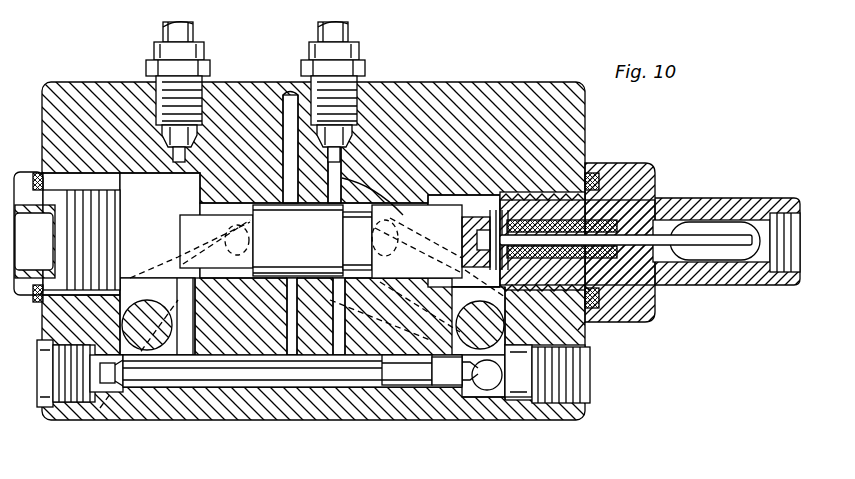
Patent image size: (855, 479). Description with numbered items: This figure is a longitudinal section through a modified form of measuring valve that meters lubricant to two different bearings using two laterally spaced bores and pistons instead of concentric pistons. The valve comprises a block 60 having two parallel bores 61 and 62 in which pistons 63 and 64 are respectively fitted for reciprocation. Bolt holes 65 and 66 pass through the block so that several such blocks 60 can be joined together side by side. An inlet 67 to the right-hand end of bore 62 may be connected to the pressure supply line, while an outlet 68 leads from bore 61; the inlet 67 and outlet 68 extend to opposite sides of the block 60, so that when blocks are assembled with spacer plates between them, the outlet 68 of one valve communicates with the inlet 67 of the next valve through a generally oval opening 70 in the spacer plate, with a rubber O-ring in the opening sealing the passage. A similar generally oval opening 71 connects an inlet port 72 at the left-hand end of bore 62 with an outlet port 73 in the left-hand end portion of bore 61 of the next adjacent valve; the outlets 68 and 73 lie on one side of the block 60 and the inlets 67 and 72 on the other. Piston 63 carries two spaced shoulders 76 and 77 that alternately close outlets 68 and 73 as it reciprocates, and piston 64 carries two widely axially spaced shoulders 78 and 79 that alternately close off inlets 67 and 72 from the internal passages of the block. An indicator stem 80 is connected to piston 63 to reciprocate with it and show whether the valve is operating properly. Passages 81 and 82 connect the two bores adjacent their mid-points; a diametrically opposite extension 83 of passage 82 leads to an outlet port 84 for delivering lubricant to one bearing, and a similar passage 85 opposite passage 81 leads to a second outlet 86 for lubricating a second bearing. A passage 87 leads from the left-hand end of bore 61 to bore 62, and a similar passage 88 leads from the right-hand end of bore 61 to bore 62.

The block 60 is at (67, 82).
The bore 61 is at (253, 220).
The bore 62 is at (241, 383).
The piston 63 is at (180, 226).
The piston 64 is at (315, 370).
The bolt hole 65 is at (46, 312).
The bolt hole 66 is at (578, 330).
The inlet 67 is at (520, 350).
The outlet 68 is at (388, 243).
The generally oval opening 70 is at (483, 370).
The generally oval opening 71 is at (147, 393).
The inlet port 72 is at (101, 408).
The outlet port 73 is at (272, 241).
The shoulder 76 is at (338, 225).
The shoulder 77 is at (457, 243).
The shoulder 78 is at (168, 378).
The shoulder 79 is at (400, 375).
The indicator stem 80 is at (703, 238).
The passage 81 is at (285, 350).
The passage 82 is at (338, 327).
The extension 83 is at (386, 202).
The outlet port 84 is at (360, 100).
The passage 85 is at (273, 110).
The second outlet 86 is at (200, 97).
The passage 87 is at (183, 340).
The passage 88 is at (432, 345).